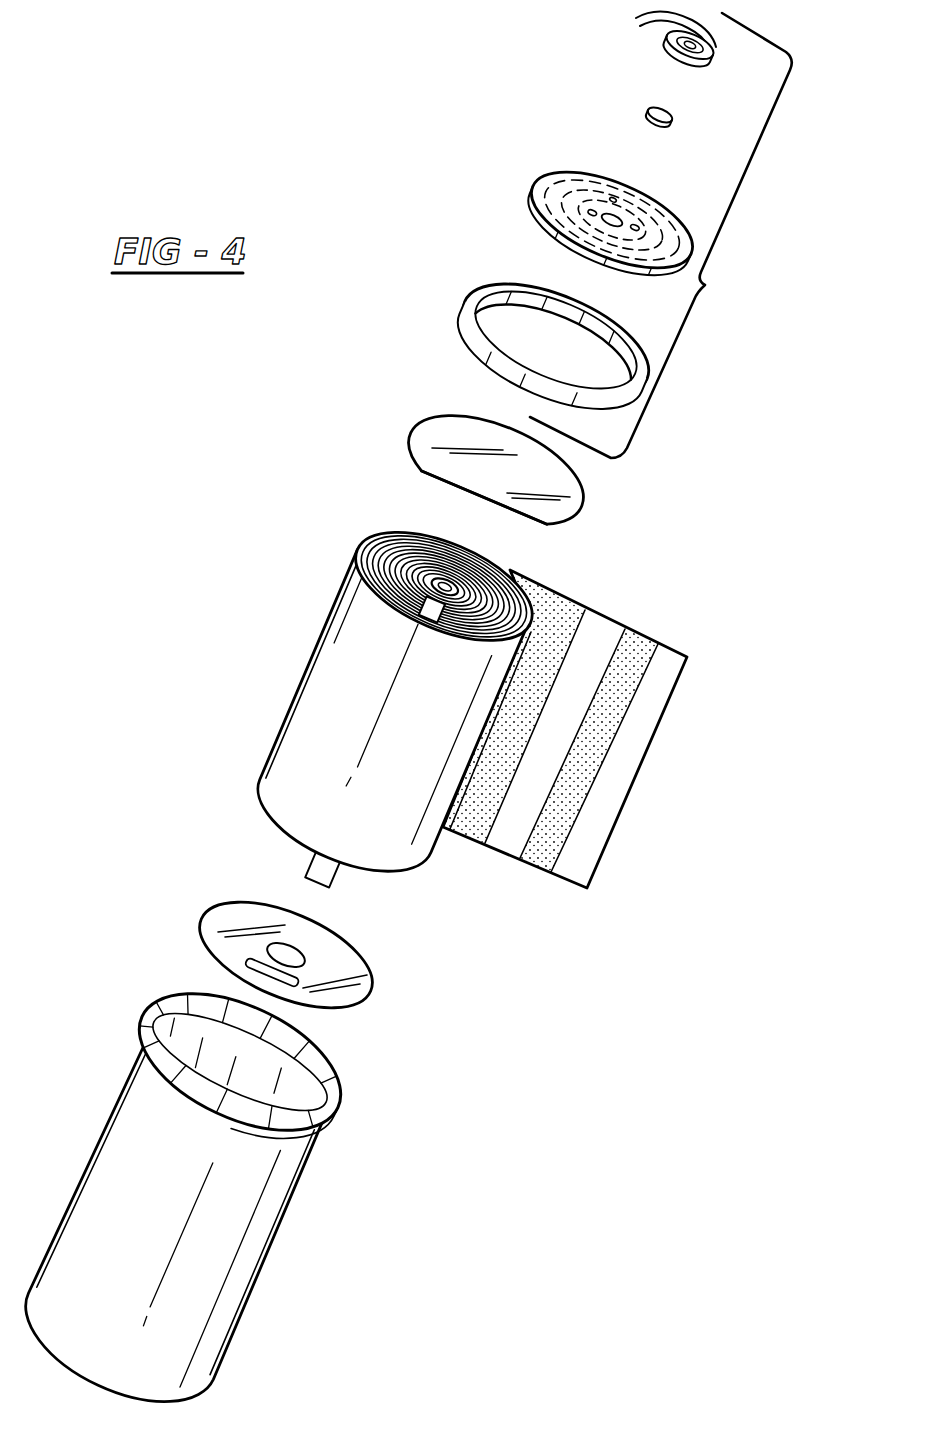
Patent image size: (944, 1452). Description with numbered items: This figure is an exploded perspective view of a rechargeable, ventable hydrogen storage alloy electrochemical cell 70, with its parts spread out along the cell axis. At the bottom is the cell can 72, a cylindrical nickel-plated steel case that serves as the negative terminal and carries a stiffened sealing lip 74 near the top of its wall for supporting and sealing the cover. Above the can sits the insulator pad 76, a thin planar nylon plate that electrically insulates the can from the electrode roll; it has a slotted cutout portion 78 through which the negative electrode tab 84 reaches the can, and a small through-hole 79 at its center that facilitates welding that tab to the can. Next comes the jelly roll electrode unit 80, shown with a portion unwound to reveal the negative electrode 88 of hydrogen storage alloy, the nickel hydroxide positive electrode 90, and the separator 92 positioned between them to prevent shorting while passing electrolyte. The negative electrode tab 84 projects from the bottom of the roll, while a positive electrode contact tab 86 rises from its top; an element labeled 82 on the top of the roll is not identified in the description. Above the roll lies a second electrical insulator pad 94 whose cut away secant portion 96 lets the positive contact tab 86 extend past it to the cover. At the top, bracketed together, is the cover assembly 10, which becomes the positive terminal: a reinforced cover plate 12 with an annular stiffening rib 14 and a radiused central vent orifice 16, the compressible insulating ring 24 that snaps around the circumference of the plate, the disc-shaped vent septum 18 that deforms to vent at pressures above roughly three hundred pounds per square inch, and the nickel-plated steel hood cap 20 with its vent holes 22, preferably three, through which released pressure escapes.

The cover assembly 10 is at (706, 285).
The reinforced cover plate 12 is at (587, 190).
The stiffening rib 14 is at (546, 179).
The vent orifice 16 is at (613, 216).
The vent septum 18 is at (646, 112).
The hood cap 20 is at (666, 50).
The vent holes 22 is at (654, 27).
The insulating ring 24 is at (468, 298).
The electrochemical cell 70 is at (672, 548).
The cell can 72 is at (181, 1180).
The stiffened sealing lip 74 is at (140, 1064).
The insulator pad 76 is at (286, 933).
The slotted cutout portion 78 is at (244, 958).
The through-hole 79 is at (275, 941).
The jelly roll electrode unit 80 is at (658, 840).
The spiral winding 82 is at (430, 590).
The negative electrode tab 84 is at (340, 870).
The positive electrode contact tab 86 is at (449, 606).
The negative electrode 88 is at (599, 748).
The positive electrode 90 is at (601, 630).
The separator 92 is at (467, 829).
The second electrical insulator pad 94 is at (494, 463).
The cut away secant portion 96 is at (428, 468).